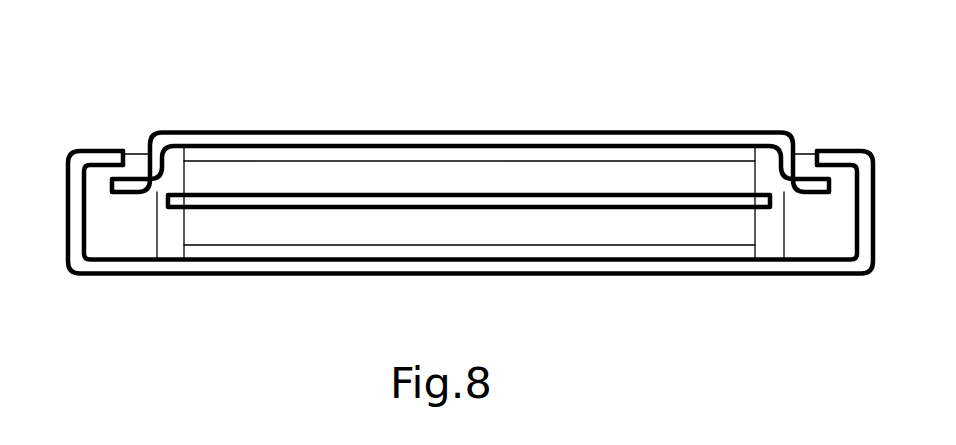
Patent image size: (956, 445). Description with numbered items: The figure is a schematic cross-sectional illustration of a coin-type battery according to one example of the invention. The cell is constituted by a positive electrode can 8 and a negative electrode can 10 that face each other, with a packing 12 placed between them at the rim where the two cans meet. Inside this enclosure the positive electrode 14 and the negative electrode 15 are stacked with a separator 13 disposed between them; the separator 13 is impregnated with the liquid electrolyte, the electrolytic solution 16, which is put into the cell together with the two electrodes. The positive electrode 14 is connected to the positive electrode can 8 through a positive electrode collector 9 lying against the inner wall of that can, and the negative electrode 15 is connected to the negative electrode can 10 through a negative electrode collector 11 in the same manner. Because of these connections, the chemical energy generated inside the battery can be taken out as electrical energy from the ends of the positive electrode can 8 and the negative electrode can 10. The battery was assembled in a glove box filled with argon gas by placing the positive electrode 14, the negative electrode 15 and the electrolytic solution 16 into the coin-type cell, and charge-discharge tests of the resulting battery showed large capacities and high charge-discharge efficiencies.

The positive electrode can 8 is at (340, 266).
The positive electrode collector 9 is at (393, 253).
The negative electrode can 10 is at (732, 138).
The negative electrode collector 11 is at (647, 152).
The packing 12 is at (813, 238).
The separator 13 is at (655, 200).
The positive electrode 14 is at (518, 227).
The negative electrode 15 is at (427, 168).
The electrolytic solution 16 is at (172, 168).